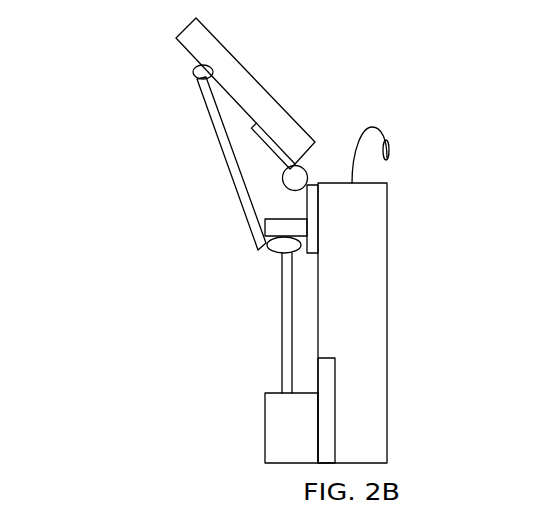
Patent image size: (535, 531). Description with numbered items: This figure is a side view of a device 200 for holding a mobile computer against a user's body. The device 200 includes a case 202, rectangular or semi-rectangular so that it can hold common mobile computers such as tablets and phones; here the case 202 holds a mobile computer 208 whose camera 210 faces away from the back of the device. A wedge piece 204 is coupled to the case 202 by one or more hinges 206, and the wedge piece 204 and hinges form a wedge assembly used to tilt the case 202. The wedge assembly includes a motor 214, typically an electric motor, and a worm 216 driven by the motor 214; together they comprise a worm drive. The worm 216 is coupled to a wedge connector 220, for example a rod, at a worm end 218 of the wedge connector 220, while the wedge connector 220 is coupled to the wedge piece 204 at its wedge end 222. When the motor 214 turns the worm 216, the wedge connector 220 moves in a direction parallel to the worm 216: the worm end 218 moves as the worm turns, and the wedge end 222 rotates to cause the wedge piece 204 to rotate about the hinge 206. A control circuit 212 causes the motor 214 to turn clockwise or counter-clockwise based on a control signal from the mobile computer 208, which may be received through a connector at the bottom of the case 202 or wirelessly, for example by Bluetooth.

The device 200 is at (85, 46).
The case 202 is at (388, 392).
The wedge piece 204 is at (258, 78).
The hinge 206 is at (321, 153).
The mobile computer 208 is at (372, 128).
The camera 210 is at (389, 149).
The control circuit 212 is at (320, 357).
The motor 214 is at (265, 427).
The worm 216 is at (282, 358).
The worm end 218 is at (276, 255).
The wedge connector 220 is at (225, 162).
The wedge end 222 is at (196, 73).